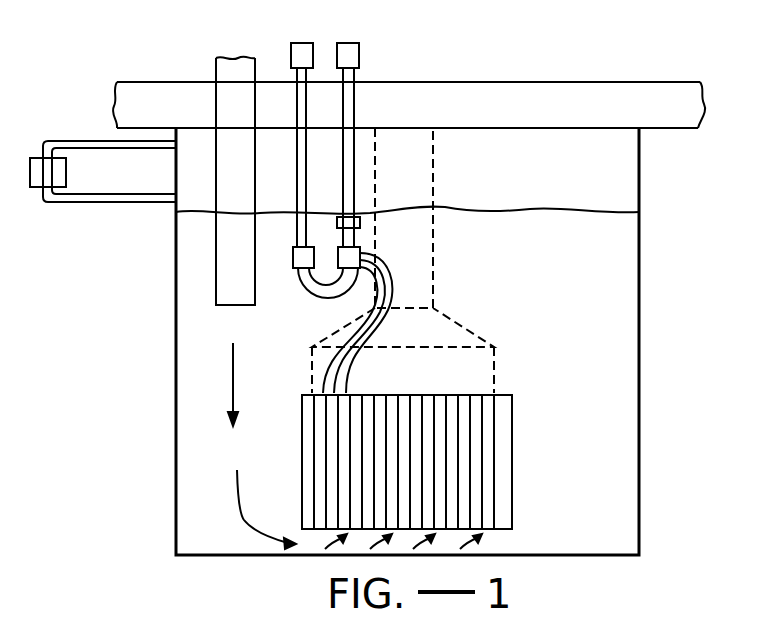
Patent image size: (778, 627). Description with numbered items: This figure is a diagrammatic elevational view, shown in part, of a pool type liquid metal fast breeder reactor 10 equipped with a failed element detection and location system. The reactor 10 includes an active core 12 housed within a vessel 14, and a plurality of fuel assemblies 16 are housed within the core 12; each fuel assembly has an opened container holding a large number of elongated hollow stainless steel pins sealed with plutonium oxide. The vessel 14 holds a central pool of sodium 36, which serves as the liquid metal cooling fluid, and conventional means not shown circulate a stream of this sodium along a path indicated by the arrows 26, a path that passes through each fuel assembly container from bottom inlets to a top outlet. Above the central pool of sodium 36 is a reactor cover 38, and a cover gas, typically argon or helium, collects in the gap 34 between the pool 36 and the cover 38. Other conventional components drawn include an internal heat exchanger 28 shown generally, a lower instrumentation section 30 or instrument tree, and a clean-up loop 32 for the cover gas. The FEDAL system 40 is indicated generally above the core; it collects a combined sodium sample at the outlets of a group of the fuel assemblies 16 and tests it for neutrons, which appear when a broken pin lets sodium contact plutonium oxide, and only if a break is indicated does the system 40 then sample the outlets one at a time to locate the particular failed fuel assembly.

The pool type liquid metal fast breeder reactor 10 is at (648, 52).
The active core 12 is at (449, 444).
The vessel 14 is at (641, 343).
The fuel assemblies 16 is at (408, 394).
The arrows 26 is at (242, 513).
The internal heat exchanger 28 is at (257, 300).
The lower instrumentation section 30 is at (438, 310).
The clean-up loop 32 is at (115, 203).
The gap 34 is at (547, 179).
The central pool of sodium 36 is at (593, 296).
The reactor cover 38 is at (500, 92).
The failed element detection and location (FEDAL) system 40 is at (372, 70).